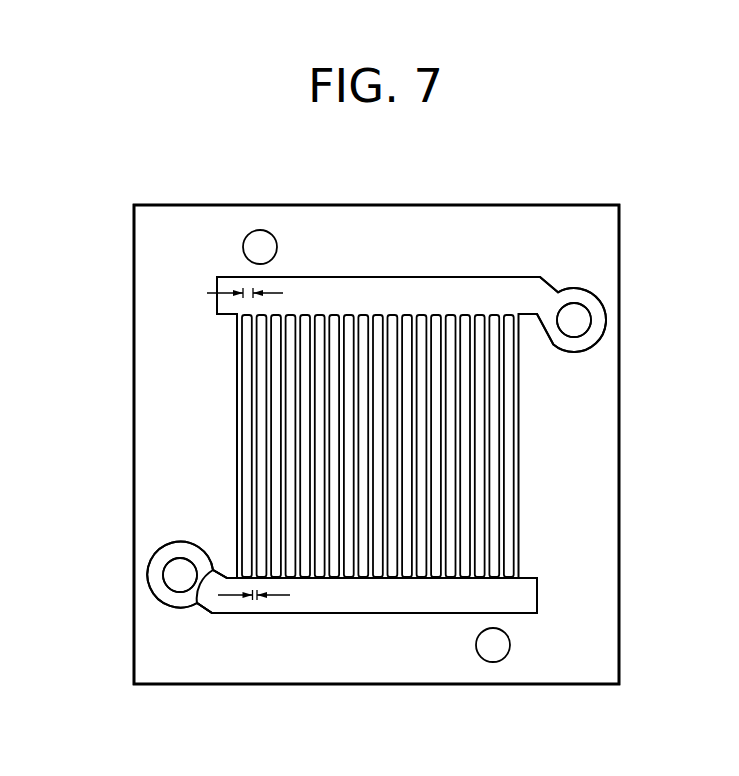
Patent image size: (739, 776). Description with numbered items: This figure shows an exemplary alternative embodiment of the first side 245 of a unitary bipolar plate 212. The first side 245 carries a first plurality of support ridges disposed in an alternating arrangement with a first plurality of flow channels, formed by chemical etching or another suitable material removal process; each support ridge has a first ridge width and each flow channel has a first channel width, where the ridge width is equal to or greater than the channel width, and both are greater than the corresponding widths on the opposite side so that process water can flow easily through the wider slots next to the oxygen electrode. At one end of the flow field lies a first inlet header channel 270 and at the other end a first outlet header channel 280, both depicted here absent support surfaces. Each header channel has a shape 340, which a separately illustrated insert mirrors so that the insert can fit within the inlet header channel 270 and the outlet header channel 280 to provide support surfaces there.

The unitary plate 212 is at (134, 312).
The first side 245 is at (402, 227).
The first inlet header channel 270 is at (324, 304).
The first outlet header channel 280 is at (430, 590).
The shape 340 is at (432, 277).